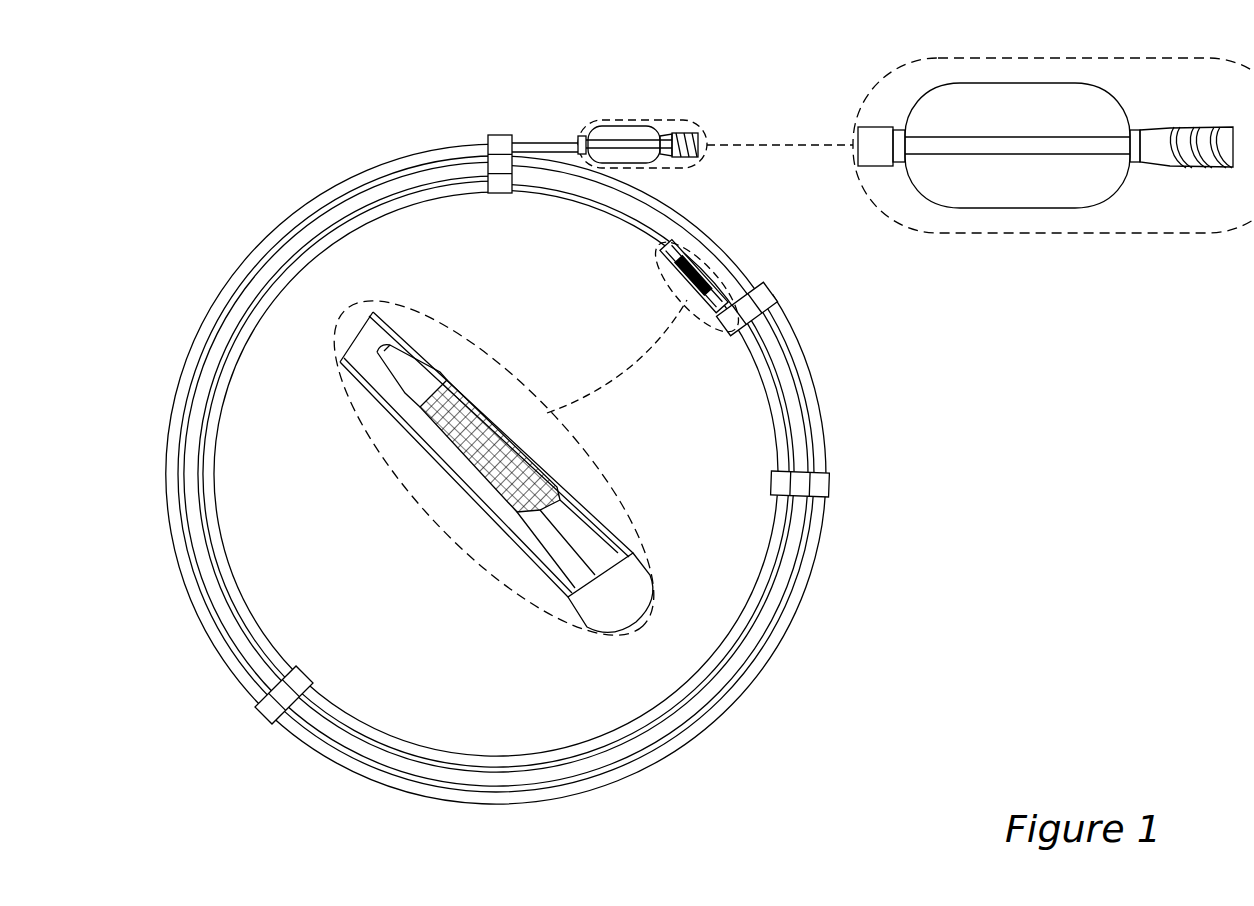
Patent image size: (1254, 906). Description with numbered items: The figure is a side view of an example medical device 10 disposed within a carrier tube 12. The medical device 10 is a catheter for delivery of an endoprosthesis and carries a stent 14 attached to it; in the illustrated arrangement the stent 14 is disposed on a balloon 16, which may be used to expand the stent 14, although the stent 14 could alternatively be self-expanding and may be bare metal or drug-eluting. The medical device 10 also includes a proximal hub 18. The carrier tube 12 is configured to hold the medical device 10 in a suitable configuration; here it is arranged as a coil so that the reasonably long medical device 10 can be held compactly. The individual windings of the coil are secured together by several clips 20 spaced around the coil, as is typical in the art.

The medical device 10 is at (592, 489).
The carrier tube 12 is at (289, 197).
The stent 14 is at (457, 400).
The balloon 16 is at (420, 403).
The proximal hub 18 is at (937, 118).
The clips 20 is at (818, 484).